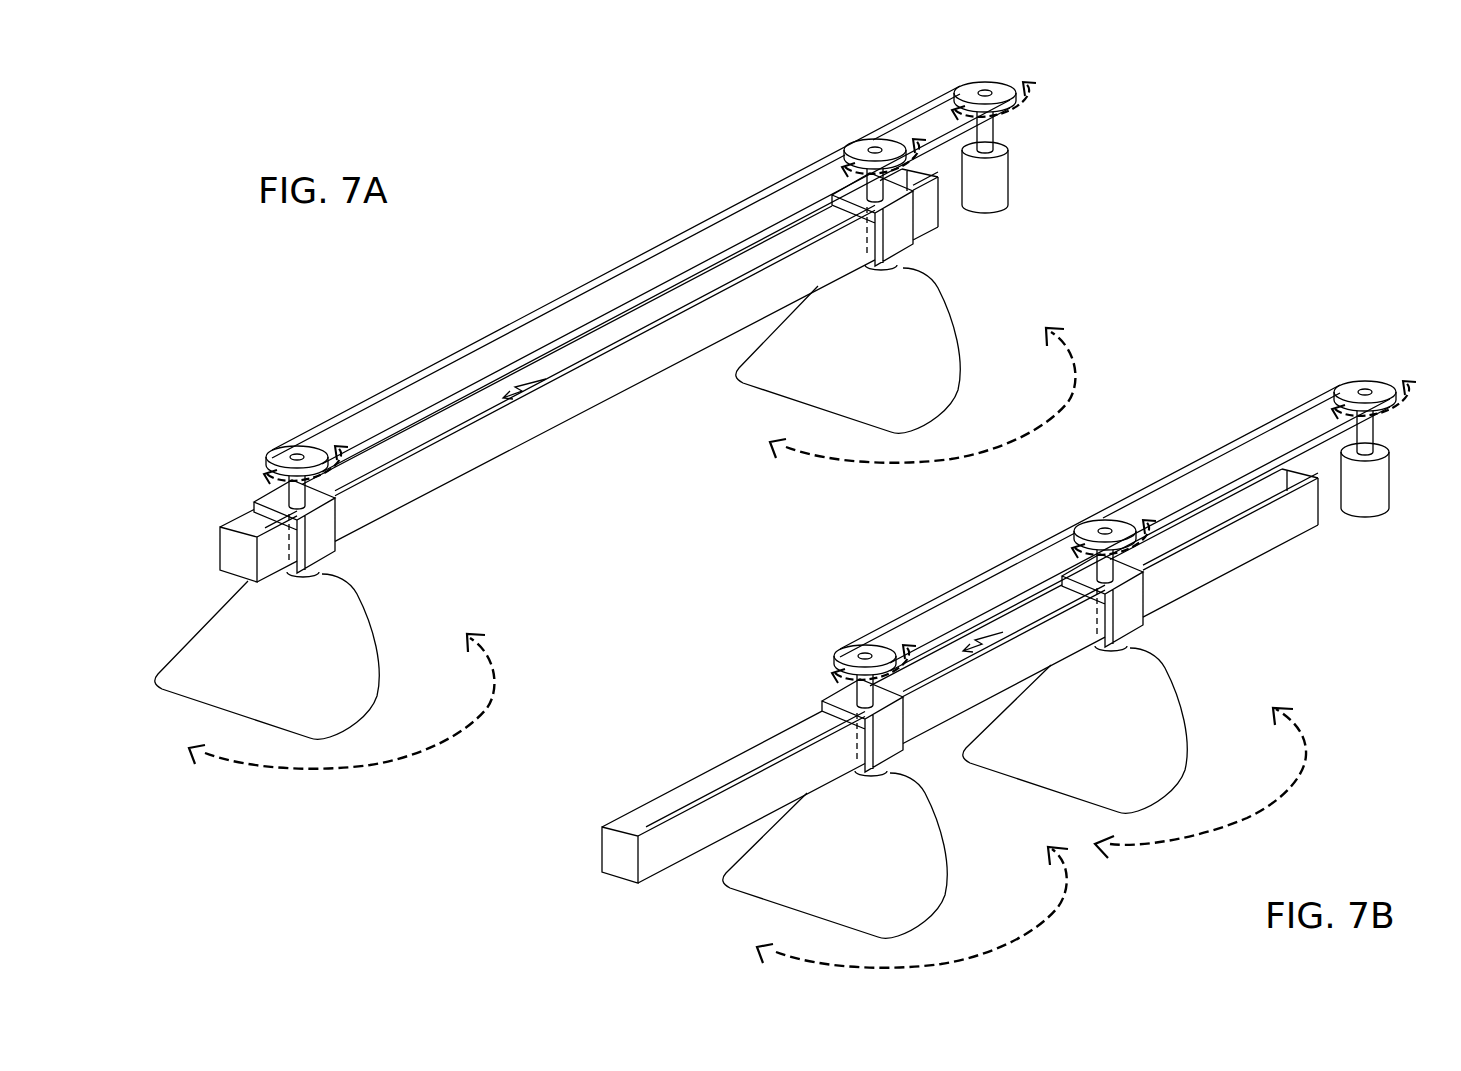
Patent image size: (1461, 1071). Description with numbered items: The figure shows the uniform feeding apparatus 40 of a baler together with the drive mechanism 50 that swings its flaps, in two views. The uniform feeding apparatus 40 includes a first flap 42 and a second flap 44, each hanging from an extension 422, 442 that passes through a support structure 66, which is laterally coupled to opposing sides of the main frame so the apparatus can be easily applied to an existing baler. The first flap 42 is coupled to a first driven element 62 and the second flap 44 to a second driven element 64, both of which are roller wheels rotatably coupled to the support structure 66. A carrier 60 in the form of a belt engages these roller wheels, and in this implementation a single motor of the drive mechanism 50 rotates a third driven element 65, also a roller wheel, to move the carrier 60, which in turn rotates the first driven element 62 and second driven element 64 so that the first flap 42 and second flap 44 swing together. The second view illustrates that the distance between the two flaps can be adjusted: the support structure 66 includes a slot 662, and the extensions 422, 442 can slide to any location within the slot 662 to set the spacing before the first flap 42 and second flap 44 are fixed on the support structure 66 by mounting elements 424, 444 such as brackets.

In FIG. 7A, the uniform feeding apparatus 40 is at (615, 518).
In FIG. 7B, the uniform feeding apparatus 40 is at (967, 806).
In FIG. 7A, the first flap 42 is at (393, 613).
In FIG. 7B, the first flap 42 is at (698, 919).
In FIG. 7A, the second flap 44 is at (720, 399).
In FIG. 7B, the second flap 44 is at (1193, 657).
In FIG. 7A, the drive mechanism 50 is at (1044, 83).
In FIG. 7B, the drive mechanism 50 is at (1278, 373).
In FIG. 7A, the carrier 60 is at (538, 309).
In FIG. 7B, the carrier 60 is at (948, 592).
In FIG. 7A, the first driven element 62 is at (268, 453).
In FIG. 7B, the first driven element 62 is at (834, 654).
In FIG. 7A, the second driven element 64 is at (858, 147).
In FIG. 7B, the second driven element 64 is at (1085, 528).
In FIG. 7A, the third driven element 65 is at (975, 84).
In FIG. 7A, the support structure 66 is at (473, 442).
In FIG. 7B, the support structure 66 is at (761, 803).
In FIG. 7A, the slot 662 is at (546, 380).
In FIG. 7B, the slot 662 is at (1003, 634).
In FIG. 7A, the extension 422 is at (313, 548).
In FIG. 7B, the extension 422 is at (888, 746).
In FIG. 7A, the mounting element 424 is at (326, 518).
In FIG. 7A, the extension 442 is at (875, 262).
In FIG. 7A, the mounting element 444 is at (896, 228).
In FIG. 7B, the mounting element 444 is at (1138, 600).